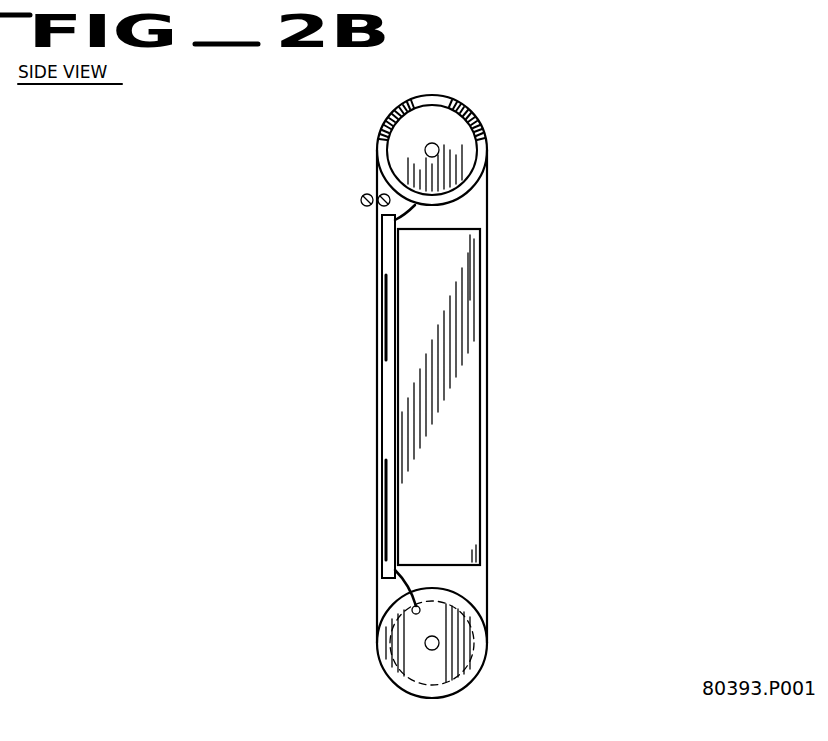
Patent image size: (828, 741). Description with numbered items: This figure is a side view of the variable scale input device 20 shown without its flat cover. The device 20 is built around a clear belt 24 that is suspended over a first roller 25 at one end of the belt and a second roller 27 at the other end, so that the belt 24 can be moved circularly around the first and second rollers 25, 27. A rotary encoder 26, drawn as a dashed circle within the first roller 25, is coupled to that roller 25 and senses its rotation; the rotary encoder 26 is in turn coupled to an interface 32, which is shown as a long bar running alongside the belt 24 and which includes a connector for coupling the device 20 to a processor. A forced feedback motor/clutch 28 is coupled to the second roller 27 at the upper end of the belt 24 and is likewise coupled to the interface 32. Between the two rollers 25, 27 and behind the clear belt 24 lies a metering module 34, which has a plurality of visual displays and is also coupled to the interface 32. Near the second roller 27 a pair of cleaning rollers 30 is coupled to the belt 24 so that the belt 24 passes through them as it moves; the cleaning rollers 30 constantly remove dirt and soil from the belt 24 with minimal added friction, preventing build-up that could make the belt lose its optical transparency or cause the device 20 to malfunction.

The variable scale input device 20 is at (678, 208).
The belt 24 is at (712, 321).
The first roller 25 is at (641, 597).
The rotary encoder 26 is at (477, 645).
The second roller 27 is at (652, 151).
The forced feedback motor/clutch 28 is at (396, 152).
The cleaning rollers 30 is at (367, 208).
The interface 32 is at (390, 332).
The metering module 34 is at (411, 504).